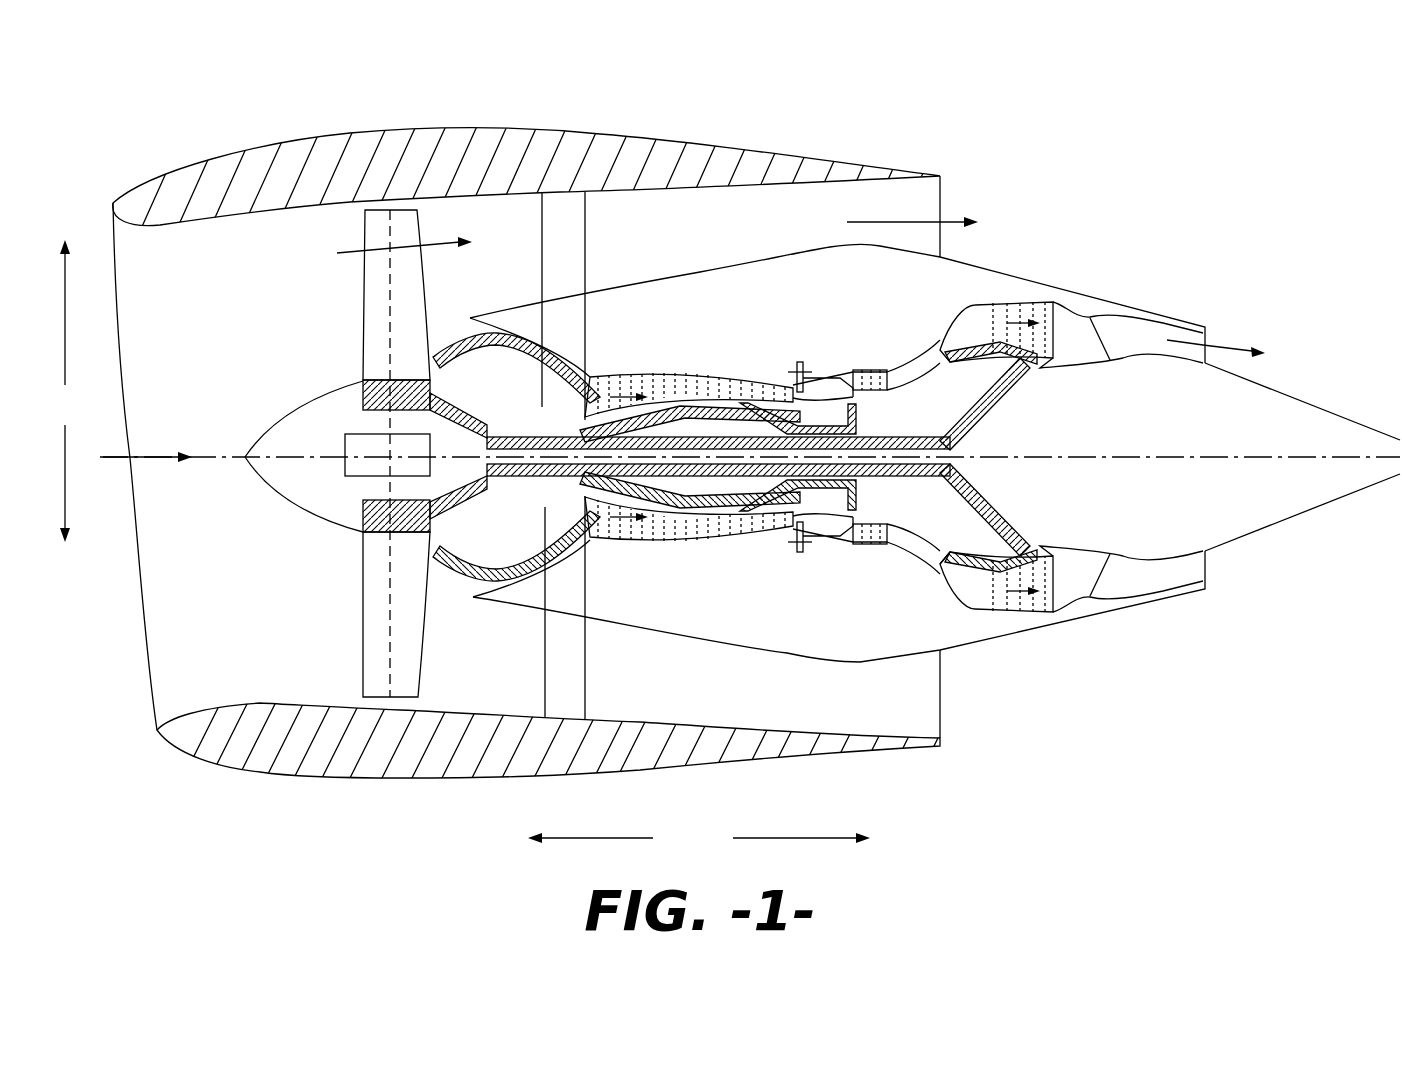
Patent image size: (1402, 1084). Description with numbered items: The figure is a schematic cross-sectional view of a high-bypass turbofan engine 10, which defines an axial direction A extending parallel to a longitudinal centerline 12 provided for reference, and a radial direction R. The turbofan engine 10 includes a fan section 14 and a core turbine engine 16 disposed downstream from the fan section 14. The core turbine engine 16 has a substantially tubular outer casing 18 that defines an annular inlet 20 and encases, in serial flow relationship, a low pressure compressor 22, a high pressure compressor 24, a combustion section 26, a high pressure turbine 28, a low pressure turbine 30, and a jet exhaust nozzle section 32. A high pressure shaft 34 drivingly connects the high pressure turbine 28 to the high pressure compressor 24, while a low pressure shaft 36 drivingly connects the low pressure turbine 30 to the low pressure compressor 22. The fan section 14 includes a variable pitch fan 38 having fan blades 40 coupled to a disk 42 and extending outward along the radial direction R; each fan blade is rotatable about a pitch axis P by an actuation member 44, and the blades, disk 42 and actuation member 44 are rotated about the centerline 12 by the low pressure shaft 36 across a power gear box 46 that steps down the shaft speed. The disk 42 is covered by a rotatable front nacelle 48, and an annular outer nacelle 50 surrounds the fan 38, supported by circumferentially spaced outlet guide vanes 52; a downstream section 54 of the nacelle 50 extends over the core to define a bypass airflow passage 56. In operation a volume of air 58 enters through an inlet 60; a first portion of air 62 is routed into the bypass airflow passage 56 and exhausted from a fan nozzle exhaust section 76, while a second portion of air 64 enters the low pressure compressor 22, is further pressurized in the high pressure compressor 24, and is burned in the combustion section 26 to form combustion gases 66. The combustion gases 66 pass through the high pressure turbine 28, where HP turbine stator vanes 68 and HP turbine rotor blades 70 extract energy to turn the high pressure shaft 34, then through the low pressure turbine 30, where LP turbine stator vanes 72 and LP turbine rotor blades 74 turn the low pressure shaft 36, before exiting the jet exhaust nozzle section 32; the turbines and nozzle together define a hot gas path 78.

The turbofan engine 10 is at (1295, 342).
The longitudinal centerline 12 is at (1118, 450).
The fan section 14 is at (440, 115).
The core turbine engine 16 is at (760, 318).
The outer casing 18 is at (783, 653).
The annular inlet 20 is at (472, 584).
The low pressure compressor 22 is at (547, 547).
The high pressure compressor 24 is at (622, 527).
The combustion section 26 is at (820, 530).
The high pressure turbine 28 is at (897, 537).
The low pressure turbine 30 is at (1040, 610).
The jet exhaust nozzle section 32 is at (1215, 333).
The high pressure shaft 34 is at (847, 403).
The low pressure shaft 36 is at (533, 427).
The variable pitch fan 38 is at (336, 295).
The fan blades 40 is at (355, 638).
The disk 42 is at (360, 393).
The actuation member 44 is at (340, 462).
The power gear box 46 is at (563, 427).
The front nacelle 48 is at (280, 427).
The outer nacelle 50 is at (420, 773).
The outlet guide vanes 52 is at (587, 218).
The downstream section 54 is at (747, 146).
The bypass airflow passage 56 is at (702, 238).
The volume of air 58 is at (147, 452).
The inlet 60 is at (147, 683).
The first portion of air 62 is at (380, 247).
The second portion of air 64 is at (453, 330).
The combustion gases 66 is at (870, 367).
The HP turbine stator vanes 68 is at (853, 550).
The HP turbine rotor blades 70 is at (877, 547).
The LP turbine stator vanes 72 is at (953, 587).
The LP turbine rotor blades 74 is at (960, 590).
The fan nozzle exhaust section 76 is at (942, 203).
The hot gas path 78 is at (926, 334).
The pitch axis P is at (400, 227).
The radial direction R is at (61, 391).
The axial direction A is at (699, 840).